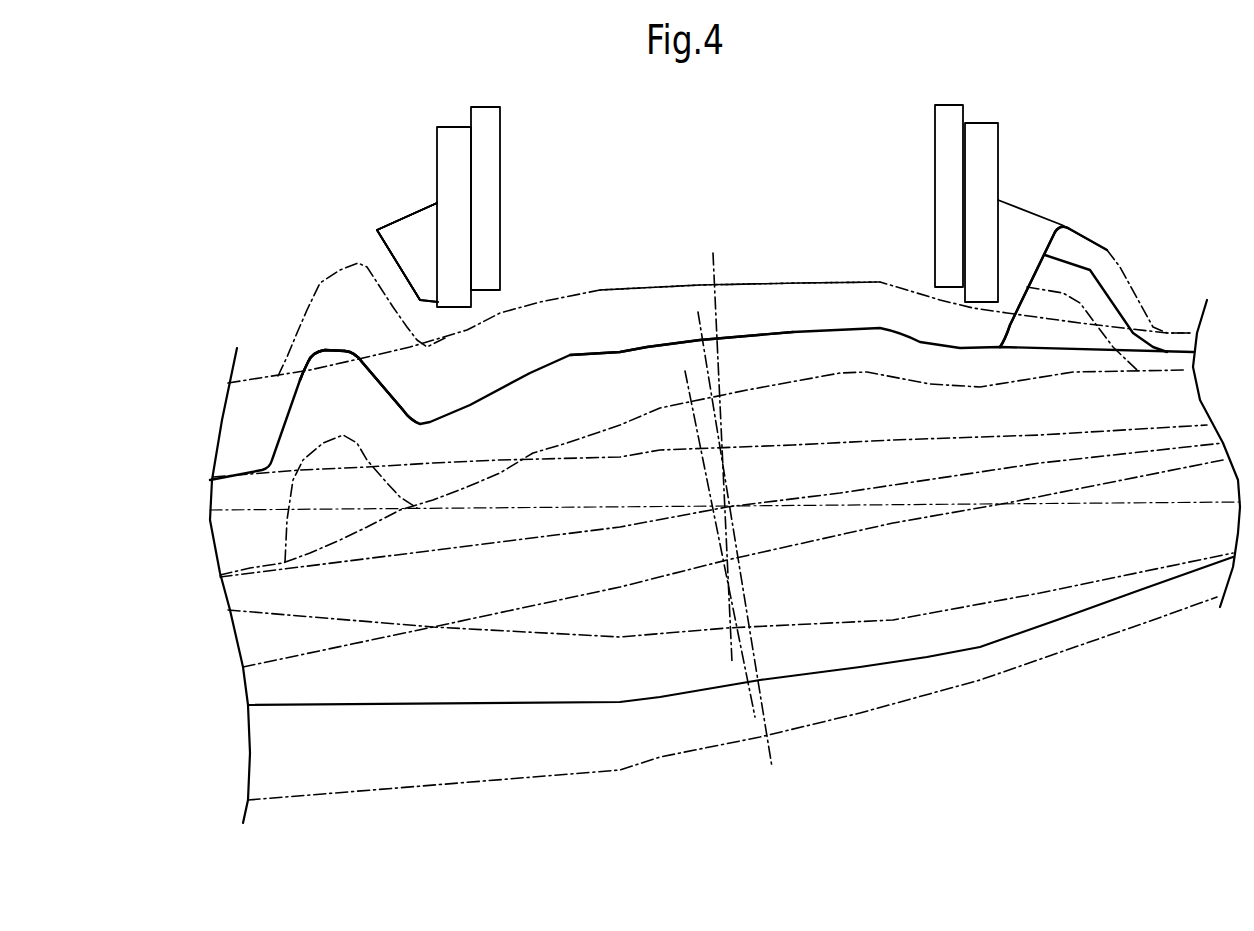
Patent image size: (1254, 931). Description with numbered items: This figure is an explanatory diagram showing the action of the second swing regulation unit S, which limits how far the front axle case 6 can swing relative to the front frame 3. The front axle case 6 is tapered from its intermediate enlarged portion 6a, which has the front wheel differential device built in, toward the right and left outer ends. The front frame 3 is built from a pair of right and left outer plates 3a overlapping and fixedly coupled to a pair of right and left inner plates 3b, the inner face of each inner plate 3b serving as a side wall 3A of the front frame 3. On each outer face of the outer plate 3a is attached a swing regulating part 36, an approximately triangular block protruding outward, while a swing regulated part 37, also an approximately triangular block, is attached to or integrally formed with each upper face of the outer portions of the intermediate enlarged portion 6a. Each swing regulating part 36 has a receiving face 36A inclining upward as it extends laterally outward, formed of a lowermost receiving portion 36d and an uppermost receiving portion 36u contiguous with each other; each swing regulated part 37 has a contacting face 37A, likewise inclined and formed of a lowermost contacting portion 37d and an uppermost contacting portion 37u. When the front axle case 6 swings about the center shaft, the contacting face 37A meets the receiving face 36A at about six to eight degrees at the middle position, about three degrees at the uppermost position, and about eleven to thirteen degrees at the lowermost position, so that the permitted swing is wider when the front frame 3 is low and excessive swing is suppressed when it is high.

The front frame 3 is at (734, 164).
The outer plate 3a is at (912, 74).
The inner plate 3b is at (943, 147).
The side wall 3A is at (503, 148).
The front axle case 6 is at (837, 373).
The intermediate enlarged portion 6a is at (647, 347).
The swing regulating part 36 is at (407, 245).
The receiving face 36A is at (272, 145).
The lowermost receiving portion 36d is at (407, 290).
The uppermost receiving portion 36u is at (383, 247).
The swing regulated part 37 is at (310, 407).
The contacting face 37A is at (155, 238).
The uppermost contacting portion 37u is at (357, 360).
The lowermost contacting portion 37d is at (403, 420).
The second swing regulation unit S is at (1070, 145).